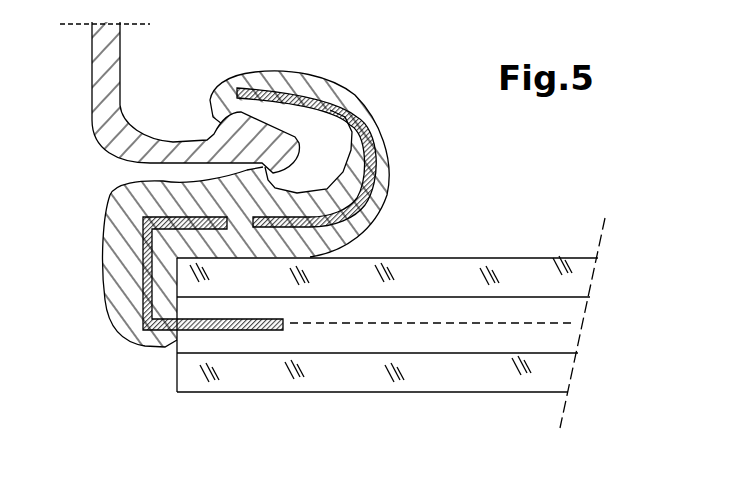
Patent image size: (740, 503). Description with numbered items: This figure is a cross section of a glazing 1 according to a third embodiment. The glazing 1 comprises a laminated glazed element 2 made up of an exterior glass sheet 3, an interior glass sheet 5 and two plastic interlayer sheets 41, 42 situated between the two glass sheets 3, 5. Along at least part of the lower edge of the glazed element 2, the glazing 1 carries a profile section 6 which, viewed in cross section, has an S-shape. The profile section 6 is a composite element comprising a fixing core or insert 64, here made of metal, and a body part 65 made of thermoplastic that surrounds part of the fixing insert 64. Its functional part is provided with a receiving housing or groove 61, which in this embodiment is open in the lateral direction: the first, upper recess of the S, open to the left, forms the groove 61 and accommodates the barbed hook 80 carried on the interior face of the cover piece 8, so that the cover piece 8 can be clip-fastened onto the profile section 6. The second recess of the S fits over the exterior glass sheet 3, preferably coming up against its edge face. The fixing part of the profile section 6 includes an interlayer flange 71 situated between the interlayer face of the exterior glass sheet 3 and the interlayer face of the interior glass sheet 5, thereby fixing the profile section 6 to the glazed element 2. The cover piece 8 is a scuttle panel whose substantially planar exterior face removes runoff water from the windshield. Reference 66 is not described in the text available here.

The glazing 1 is at (594, 160).
The laminated glazed element 2 is at (455, 232).
The exterior glass sheet 3 is at (517, 270).
The interior glass sheet 5 is at (487, 378).
The profile section 6 is at (72, 278).
The cover piece 8 is at (142, 47).
The plastic interlayer sheet 41 is at (563, 310).
The plastic interlayer sheet 42 is at (557, 338).
The receiving housing or groove 61 is at (325, 157).
The fixing core or insert 64 is at (158, 343).
The body part 65 is at (113, 210).
The outer seal surface 66 is at (366, 108).
The interlayer flange 71 is at (248, 333).
The barbed hook 80 is at (263, 140).